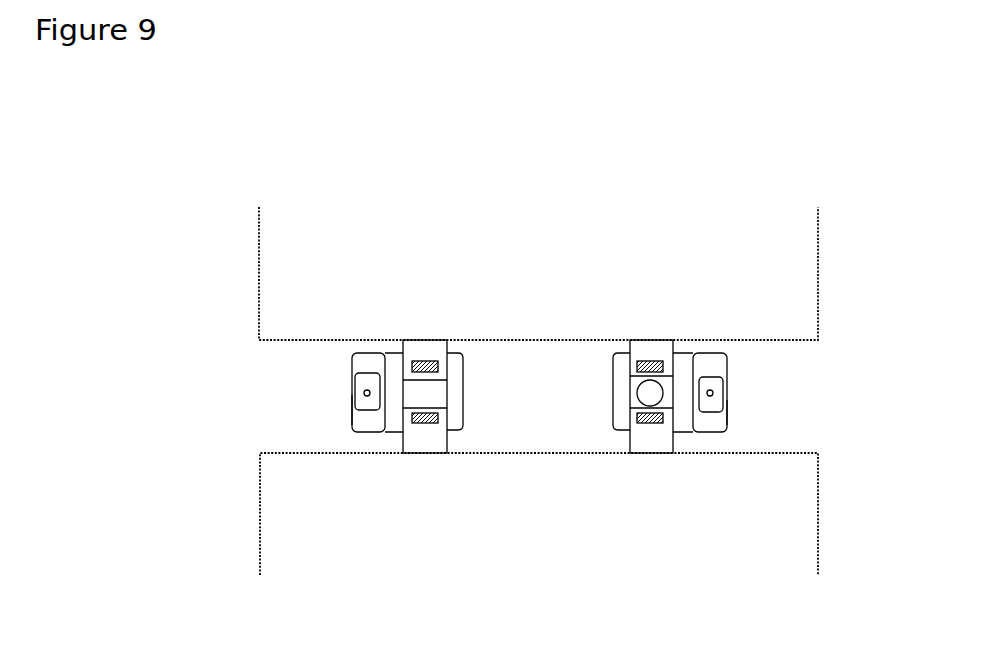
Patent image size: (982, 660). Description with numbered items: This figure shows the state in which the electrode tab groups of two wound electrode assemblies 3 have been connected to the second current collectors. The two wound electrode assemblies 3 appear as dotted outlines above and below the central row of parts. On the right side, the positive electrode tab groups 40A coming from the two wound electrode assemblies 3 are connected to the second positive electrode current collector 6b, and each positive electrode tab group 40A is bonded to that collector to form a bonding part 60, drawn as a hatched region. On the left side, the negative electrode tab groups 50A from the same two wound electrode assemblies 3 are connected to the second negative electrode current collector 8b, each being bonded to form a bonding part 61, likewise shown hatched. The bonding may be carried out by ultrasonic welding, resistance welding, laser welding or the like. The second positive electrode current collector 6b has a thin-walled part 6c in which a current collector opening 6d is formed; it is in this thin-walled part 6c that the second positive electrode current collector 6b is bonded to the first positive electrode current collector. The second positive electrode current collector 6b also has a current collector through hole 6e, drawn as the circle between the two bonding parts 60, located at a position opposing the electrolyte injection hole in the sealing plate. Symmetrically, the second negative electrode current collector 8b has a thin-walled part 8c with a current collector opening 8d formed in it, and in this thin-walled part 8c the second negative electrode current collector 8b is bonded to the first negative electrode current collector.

The wound electrode assembly 3 is at (780, 299).
The negative electrode tab group 50A is at (420, 352).
The positive electrode tab group 40A is at (651, 355).
The bonding part 61 is at (435, 363).
The bonding part 60 is at (637, 362).
The second negative electrode current collector 8b is at (368, 362).
The current collector opening 8d is at (355, 392).
The thin-walled part 8c is at (353, 405).
The second positive electrode current collector 6b is at (727, 360).
The current collector opening 6d is at (727, 390).
The thin-walled part 6c is at (727, 412).
The current collector through hole 6e is at (636, 393).